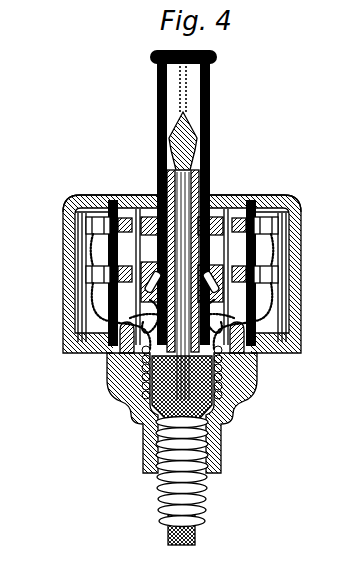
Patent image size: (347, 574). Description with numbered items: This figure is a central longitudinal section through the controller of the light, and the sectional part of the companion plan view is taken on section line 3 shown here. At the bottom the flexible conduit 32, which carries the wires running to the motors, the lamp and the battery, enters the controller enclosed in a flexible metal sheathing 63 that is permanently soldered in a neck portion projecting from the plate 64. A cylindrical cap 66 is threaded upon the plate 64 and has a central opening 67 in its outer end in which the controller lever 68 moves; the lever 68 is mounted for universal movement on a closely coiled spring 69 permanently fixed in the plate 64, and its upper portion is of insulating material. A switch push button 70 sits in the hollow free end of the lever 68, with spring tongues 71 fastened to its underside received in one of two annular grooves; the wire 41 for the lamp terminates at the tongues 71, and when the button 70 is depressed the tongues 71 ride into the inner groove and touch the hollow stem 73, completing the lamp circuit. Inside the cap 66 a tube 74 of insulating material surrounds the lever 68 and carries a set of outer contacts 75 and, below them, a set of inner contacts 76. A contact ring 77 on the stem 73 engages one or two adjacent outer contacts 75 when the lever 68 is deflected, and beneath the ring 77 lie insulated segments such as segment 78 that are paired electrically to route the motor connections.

The section line 3— 3 is at (182, 42).
The flexible conduit 32 is at (195, 536).
The wire 41 is at (184, 258).
The flexible metal sheathing 63 is at (209, 510).
The plate 64 is at (253, 374).
The cylindrical cap 66 is at (299, 264).
The central opening 67 is at (220, 191).
The controller lever 68 is at (206, 138).
The closely coiled spring 69 is at (124, 385).
The switch push button 70 is at (216, 61).
The spring tongues 71 is at (163, 166).
The hollow stem 73 is at (236, 273).
The tube of insulating material 74 is at (112, 249).
The outer contacts 75 is at (78, 230).
The inner contacts 76 is at (87, 283).
The contact ring 77 is at (134, 273).
The segment 78 is at (182, 250).